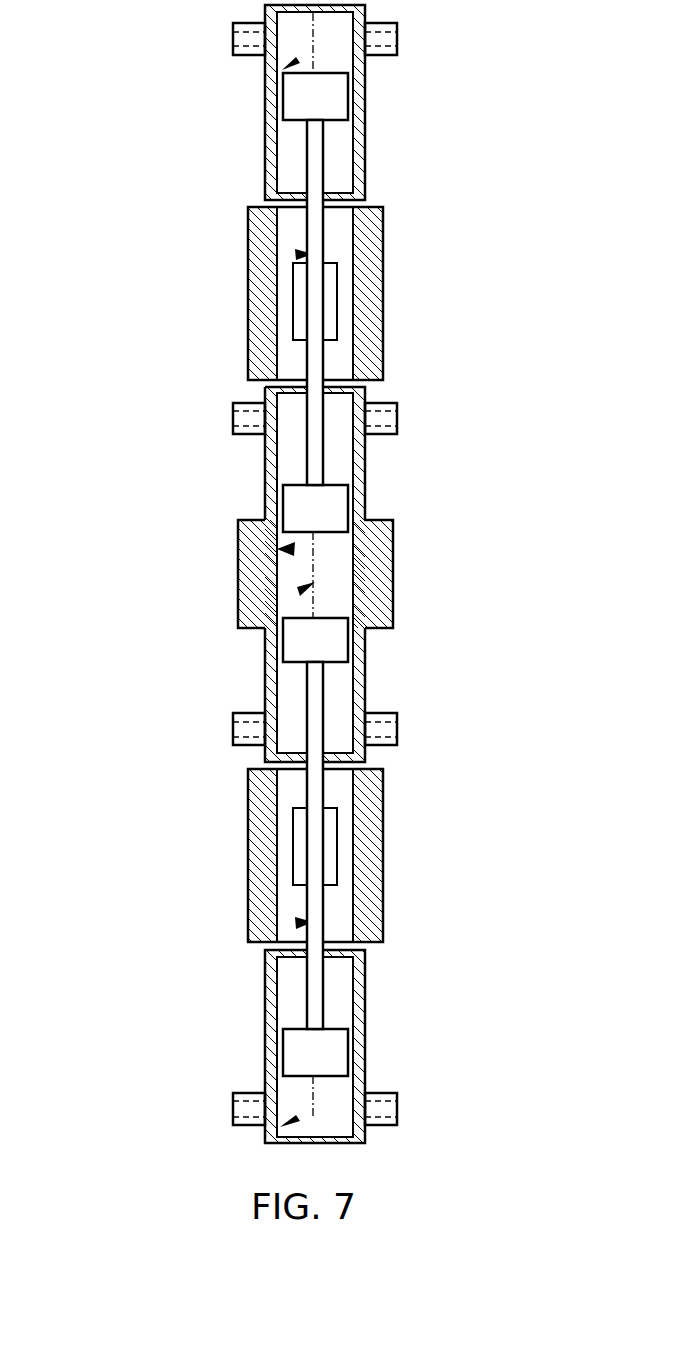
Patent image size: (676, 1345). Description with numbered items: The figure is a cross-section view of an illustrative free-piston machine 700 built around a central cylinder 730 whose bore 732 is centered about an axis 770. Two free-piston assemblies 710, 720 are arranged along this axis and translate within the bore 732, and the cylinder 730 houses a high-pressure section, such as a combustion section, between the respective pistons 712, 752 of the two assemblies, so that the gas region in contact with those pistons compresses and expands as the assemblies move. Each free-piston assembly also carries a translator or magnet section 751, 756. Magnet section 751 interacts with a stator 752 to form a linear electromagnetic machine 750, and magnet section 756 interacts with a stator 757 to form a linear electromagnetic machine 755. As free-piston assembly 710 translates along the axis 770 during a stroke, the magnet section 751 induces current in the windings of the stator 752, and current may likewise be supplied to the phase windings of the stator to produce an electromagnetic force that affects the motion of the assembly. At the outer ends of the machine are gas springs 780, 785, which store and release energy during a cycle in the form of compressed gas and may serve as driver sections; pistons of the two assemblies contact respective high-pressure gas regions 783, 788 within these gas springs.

The free-piston machine 700 is at (93, 121).
The gas spring 780 is at (483, 2).
The gas region 783 is at (283, 66).
The linear electromagnetic machine 750 is at (483, 210).
The free-piston assembly 710 is at (298, 252).
The magnet section 751 is at (300, 310).
The stator 752 is at (247, 357).
The cylinder 730 is at (393, 573).
The piston 712 is at (335, 495).
The bore 732 is at (295, 549).
The axis 770 is at (297, 590).
The linear electromagnetic machine 755 is at (483, 771).
The magnet section 756 is at (303, 842).
The stator 757 is at (247, 873).
The free-piston assembly 720 is at (298, 921).
The gas spring 785 is at (483, 958).
The gas region 788 is at (283, 1122).